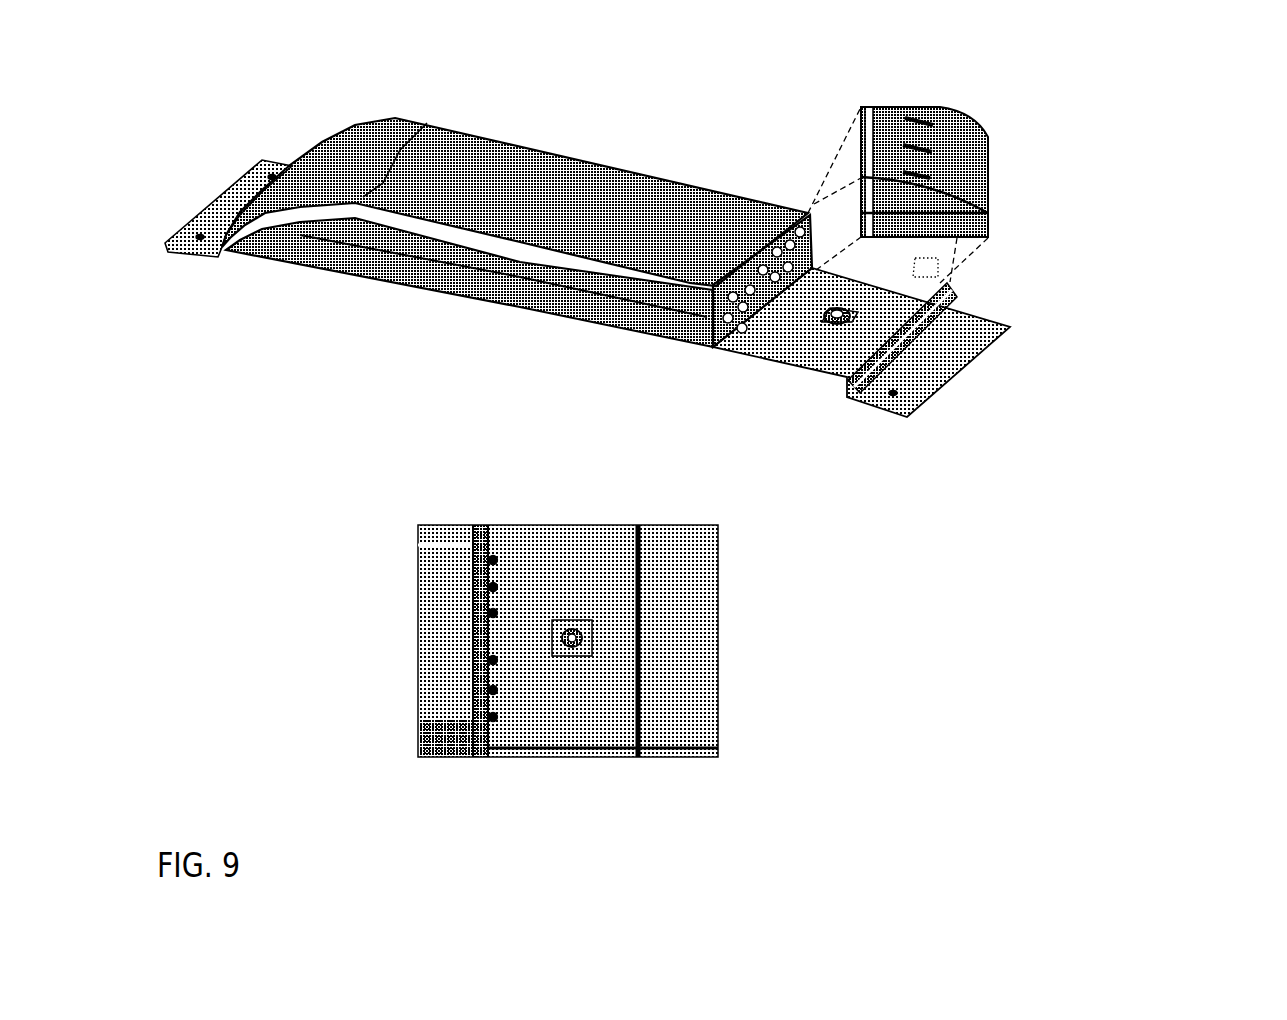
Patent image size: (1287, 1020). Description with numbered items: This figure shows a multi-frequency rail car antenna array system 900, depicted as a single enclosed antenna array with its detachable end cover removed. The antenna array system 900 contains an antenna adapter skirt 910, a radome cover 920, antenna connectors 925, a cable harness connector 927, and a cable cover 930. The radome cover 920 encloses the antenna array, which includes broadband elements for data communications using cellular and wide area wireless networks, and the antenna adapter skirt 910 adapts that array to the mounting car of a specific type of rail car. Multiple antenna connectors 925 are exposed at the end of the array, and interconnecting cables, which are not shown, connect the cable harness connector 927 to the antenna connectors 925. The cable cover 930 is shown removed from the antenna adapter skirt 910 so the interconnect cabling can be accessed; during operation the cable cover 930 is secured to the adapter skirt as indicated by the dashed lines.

The multi-frequency rail car antenna array system 900 is at (1262, 36).
The antenna adapter skirt 910 is at (920, 354).
The radome cover 920 is at (488, 284).
The antenna connectors 925 is at (647, 474).
The cable harness connector 927 is at (705, 482).
The cable cover 930 is at (957, 195).